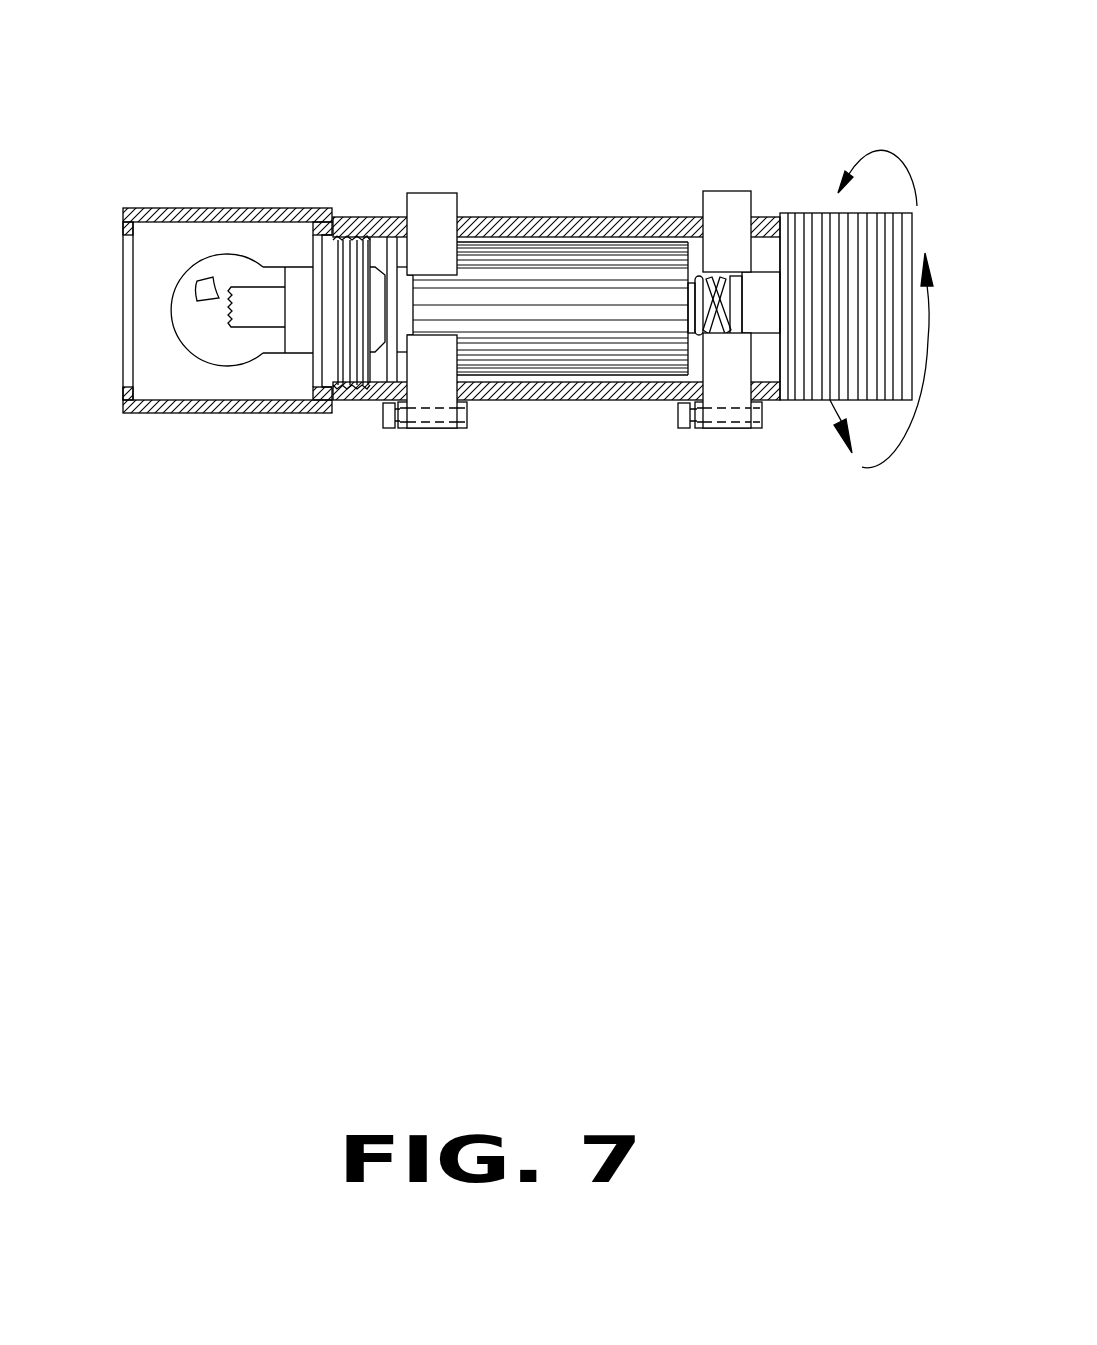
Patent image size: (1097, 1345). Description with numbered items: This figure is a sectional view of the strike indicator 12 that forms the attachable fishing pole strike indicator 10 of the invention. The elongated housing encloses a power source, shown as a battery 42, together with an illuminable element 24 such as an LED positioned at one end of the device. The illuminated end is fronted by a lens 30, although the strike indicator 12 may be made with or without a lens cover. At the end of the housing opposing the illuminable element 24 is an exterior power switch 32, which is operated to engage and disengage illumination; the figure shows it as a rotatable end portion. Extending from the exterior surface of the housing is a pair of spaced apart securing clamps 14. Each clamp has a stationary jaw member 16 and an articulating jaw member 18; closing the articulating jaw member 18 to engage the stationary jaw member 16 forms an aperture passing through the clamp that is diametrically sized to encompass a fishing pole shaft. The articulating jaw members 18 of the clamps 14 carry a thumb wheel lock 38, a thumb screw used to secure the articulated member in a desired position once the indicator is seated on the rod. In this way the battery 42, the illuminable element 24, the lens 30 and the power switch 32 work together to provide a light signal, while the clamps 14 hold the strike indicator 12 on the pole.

The attachable fishing pole strike indicator 10 is at (643, 400).
The strike indicator 12 is at (877, 85).
The securing clamps 14 is at (725, 193).
The stationary jaw member 16 is at (435, 195).
The articulating jaw member 18 is at (437, 428).
The illuminable element 24 is at (213, 267).
The lens 30 is at (125, 275).
The power switch 32 is at (835, 232).
The thumb wheel lock 38 is at (383, 422).
The battery 42 is at (585, 278).